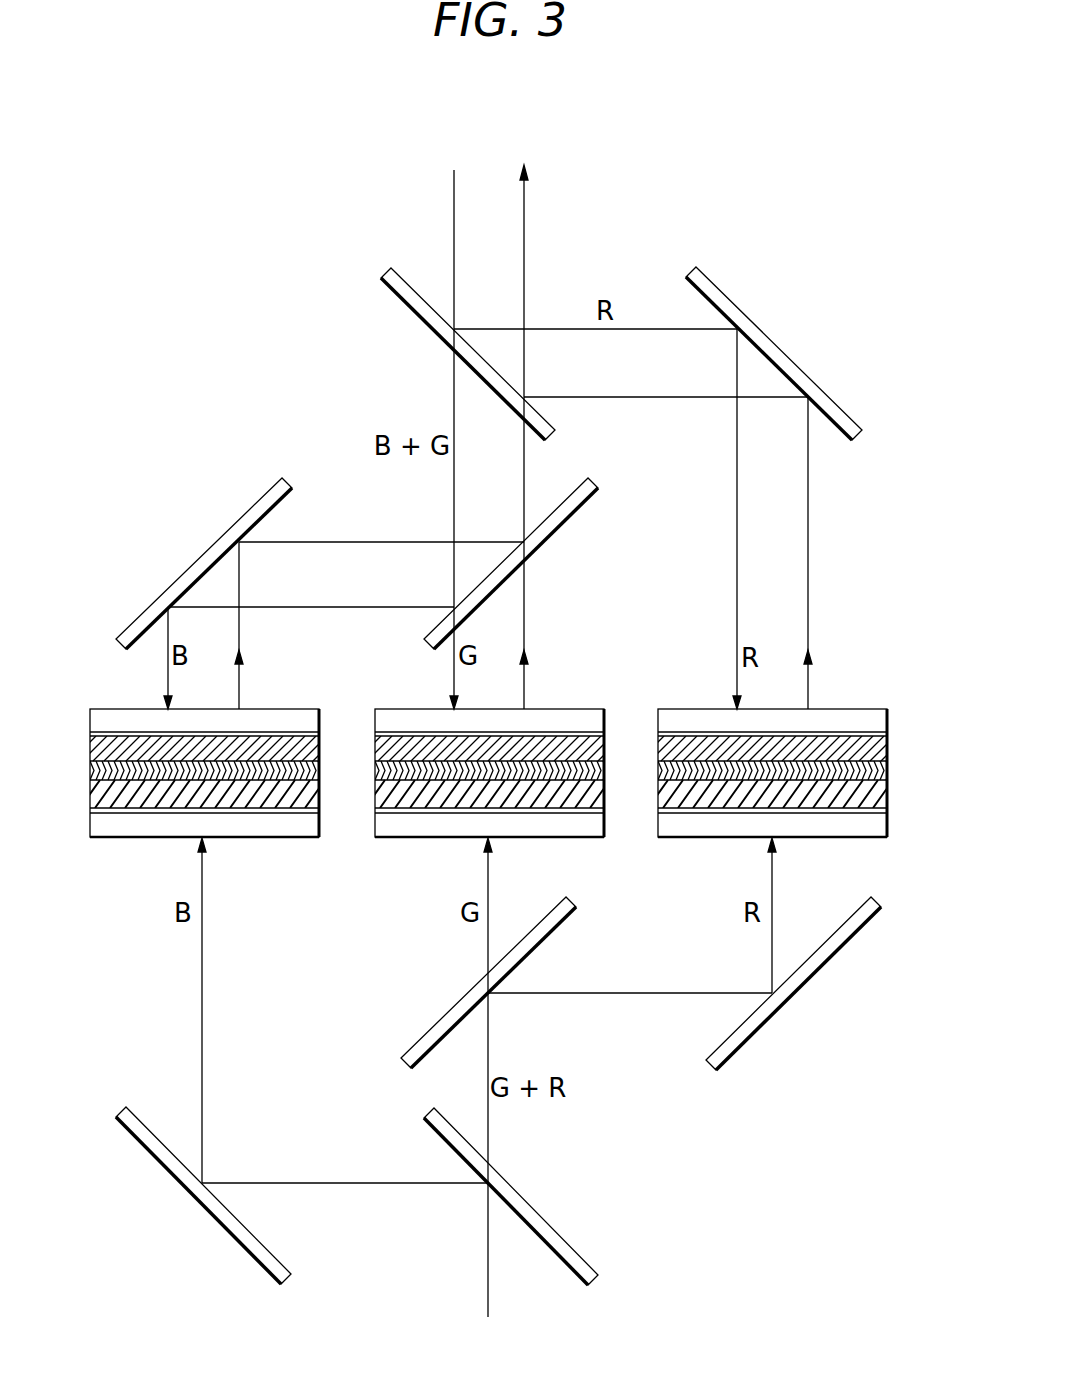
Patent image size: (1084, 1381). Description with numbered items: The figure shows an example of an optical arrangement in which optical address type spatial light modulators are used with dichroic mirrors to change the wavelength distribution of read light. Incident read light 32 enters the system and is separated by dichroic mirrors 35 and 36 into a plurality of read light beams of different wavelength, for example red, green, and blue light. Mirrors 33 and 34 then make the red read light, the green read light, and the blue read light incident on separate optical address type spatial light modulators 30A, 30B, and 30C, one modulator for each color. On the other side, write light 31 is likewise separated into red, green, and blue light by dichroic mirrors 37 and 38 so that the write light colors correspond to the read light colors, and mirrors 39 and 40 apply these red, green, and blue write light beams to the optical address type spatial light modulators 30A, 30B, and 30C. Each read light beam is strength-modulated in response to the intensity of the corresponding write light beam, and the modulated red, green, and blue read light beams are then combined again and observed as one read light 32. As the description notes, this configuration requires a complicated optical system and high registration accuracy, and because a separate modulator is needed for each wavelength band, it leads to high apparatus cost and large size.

The optical address type spatial light modulator 30A is at (266, 700).
The optical address type spatial light modulator 30B is at (552, 700).
The optical address type spatial light modulator 30C is at (837, 700).
The write light 31 is at (487, 1098).
The read light 32 is at (489, 416).
The mirror 33 is at (202, 560).
The mirror 34 is at (778, 349).
The dichroic mirror 35 is at (424, 321).
The dichroic mirror 36 is at (561, 522).
The dichroic mirror 37 is at (447, 1021).
The dichroic mirror 38 is at (553, 1234).
The mirror 39 is at (199, 1199).
The mirror 40 is at (838, 945).